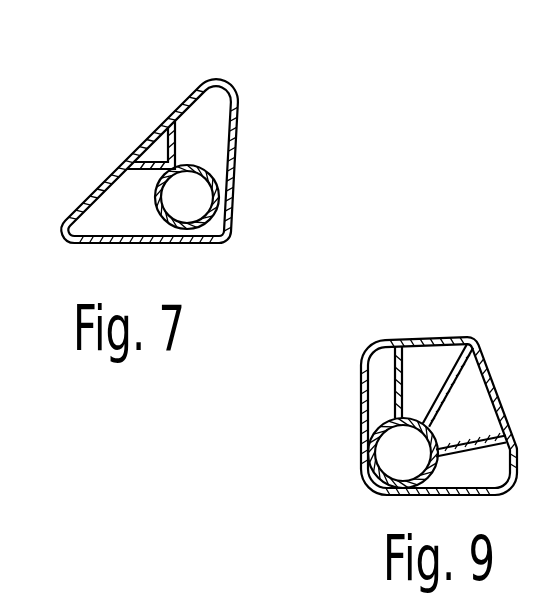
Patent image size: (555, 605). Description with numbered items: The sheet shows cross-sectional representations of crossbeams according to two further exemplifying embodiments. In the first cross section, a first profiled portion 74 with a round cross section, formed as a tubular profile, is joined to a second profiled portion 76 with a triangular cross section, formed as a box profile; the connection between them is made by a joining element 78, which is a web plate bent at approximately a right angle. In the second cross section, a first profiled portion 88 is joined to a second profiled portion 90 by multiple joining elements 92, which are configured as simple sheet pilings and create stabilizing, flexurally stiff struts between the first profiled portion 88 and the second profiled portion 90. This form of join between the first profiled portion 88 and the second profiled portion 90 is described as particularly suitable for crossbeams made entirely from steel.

In FIG. 7, the first profiled portion 74 is at (155, 211).
In FIG. 7, the second profiled portion 76 is at (230, 129).
In FIG. 7, the joining element 78 is at (135, 158).
In FIG. 9, the first profiled portion 88 is at (364, 470).
In FIG. 9, the second profiled portion 90 is at (446, 336).
In FIG. 9, the joining elements 92 is at (397, 382).